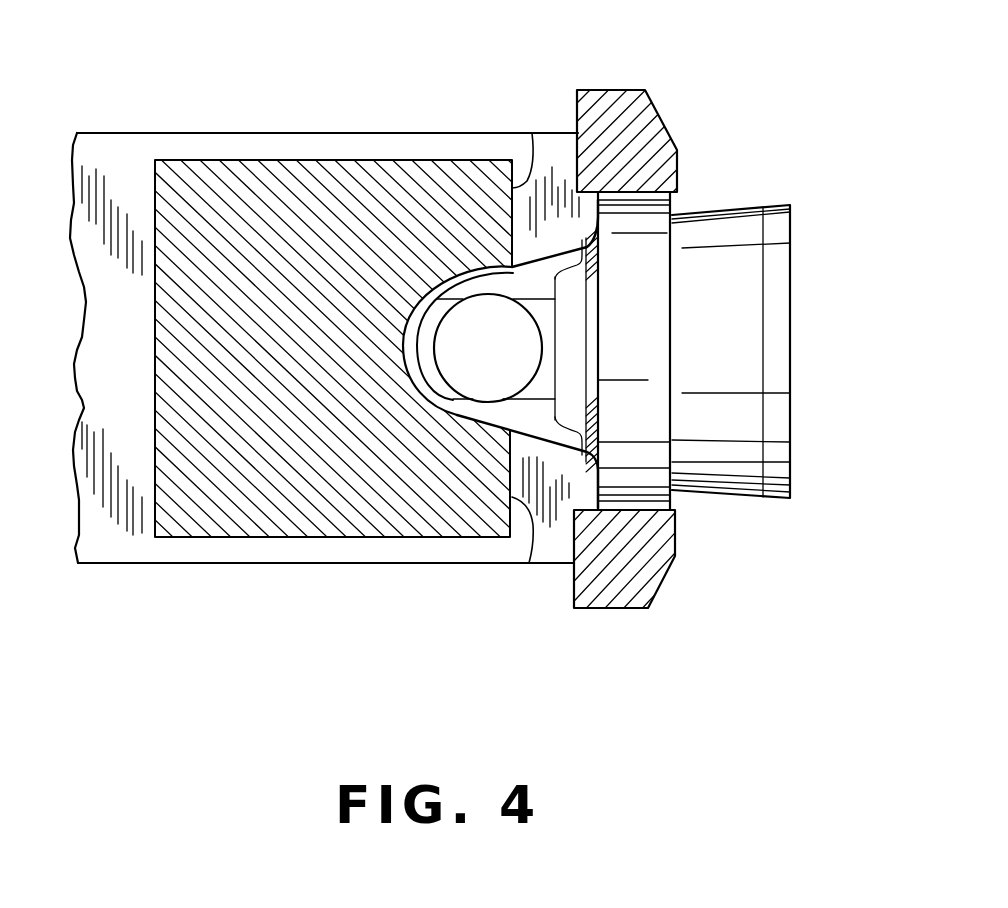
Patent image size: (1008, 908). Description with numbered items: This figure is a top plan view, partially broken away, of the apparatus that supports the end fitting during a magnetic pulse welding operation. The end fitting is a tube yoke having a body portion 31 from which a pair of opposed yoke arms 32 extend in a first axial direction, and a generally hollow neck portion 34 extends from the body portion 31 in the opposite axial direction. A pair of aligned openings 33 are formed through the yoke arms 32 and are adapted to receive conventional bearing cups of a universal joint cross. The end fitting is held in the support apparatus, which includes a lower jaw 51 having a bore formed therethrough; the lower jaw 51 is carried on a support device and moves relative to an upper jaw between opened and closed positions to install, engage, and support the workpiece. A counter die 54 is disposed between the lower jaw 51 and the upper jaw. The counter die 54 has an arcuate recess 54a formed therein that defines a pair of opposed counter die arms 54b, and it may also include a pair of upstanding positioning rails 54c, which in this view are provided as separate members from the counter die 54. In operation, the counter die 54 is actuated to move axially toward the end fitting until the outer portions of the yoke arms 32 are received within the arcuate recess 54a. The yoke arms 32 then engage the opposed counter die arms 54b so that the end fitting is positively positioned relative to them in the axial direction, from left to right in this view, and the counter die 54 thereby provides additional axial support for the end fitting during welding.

The body portion 31 is at (655, 420).
The yoke arms 32 is at (535, 273).
The aligned openings 33 is at (531, 388).
The neck portion 34 is at (747, 235).
The lower jaw 51 is at (125, 547).
The counter die 54 is at (230, 172).
The arcuate recess 54a is at (455, 417).
The counter die arms 54b is at (532, 133).
The positioning rails 54c is at (652, 122).